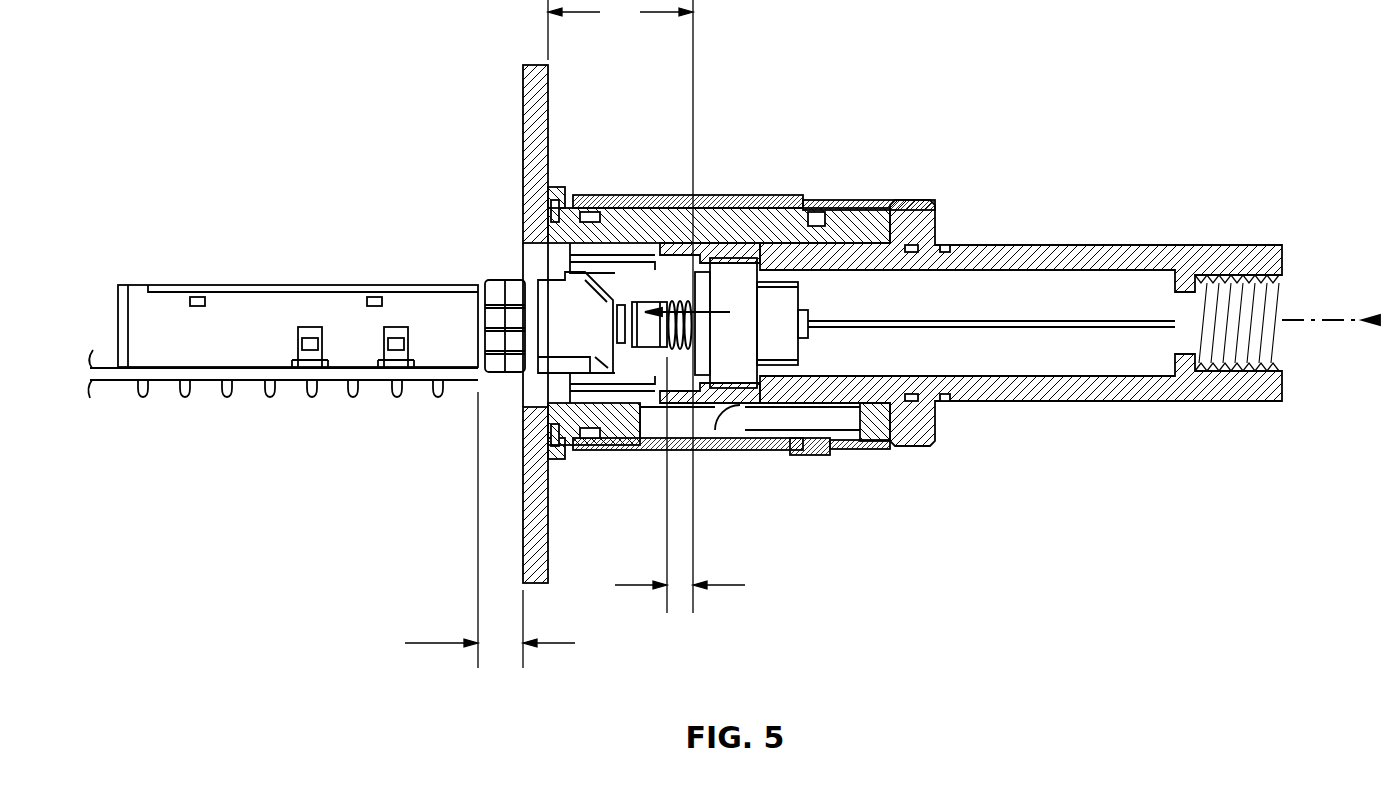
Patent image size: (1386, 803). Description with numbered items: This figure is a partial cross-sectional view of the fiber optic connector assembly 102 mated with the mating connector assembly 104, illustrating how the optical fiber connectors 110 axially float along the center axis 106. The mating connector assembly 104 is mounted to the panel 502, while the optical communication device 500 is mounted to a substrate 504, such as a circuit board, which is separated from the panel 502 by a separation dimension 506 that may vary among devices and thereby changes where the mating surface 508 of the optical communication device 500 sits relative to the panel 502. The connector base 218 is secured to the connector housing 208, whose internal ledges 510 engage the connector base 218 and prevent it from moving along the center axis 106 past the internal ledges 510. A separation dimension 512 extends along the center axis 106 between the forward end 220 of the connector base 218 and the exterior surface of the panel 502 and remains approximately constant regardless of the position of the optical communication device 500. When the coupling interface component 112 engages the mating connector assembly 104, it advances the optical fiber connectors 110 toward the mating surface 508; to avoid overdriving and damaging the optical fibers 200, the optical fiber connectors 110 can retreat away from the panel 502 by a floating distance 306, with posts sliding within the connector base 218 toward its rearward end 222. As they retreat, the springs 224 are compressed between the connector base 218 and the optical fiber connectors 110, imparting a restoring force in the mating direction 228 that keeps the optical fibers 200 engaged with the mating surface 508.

The fiber optic connector assembly 102 is at (1145, 403).
The mating connector assembly 104 is at (565, 442).
The center axis 106 is at (1350, 315).
The optical fiber connectors 110 is at (643, 335).
The coupling interface component 112 is at (812, 455).
The optical fibers 200 is at (1018, 327).
The connector housing 208 is at (850, 393).
The connector base 218 is at (738, 287).
The forward end 220 is at (690, 347).
The rearward end 222 is at (800, 356).
The springs 224 is at (682, 262).
The mating direction 228 is at (725, 310).
The floating distance 306 is at (710, 485).
The optical communication device 500 is at (308, 285).
The panel 502 is at (523, 108).
The substrate 504 is at (212, 390).
The separation dimension 506 is at (459, 530).
The mating surface 508 is at (643, 303).
The internal ledges 510 is at (737, 387).
The separation dimension 512 is at (620, 306).